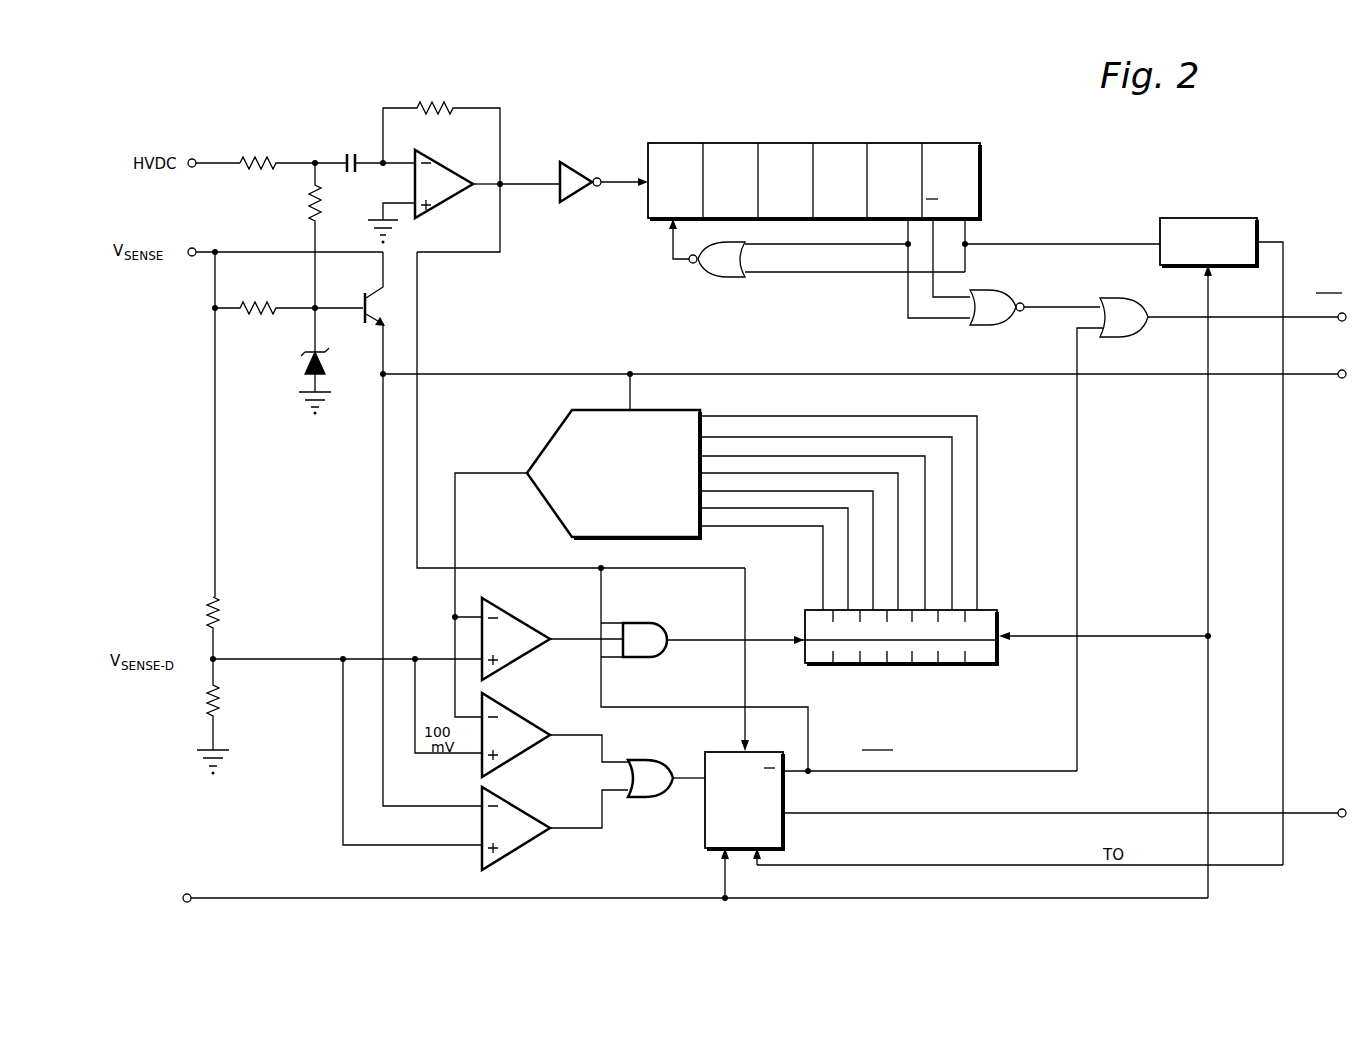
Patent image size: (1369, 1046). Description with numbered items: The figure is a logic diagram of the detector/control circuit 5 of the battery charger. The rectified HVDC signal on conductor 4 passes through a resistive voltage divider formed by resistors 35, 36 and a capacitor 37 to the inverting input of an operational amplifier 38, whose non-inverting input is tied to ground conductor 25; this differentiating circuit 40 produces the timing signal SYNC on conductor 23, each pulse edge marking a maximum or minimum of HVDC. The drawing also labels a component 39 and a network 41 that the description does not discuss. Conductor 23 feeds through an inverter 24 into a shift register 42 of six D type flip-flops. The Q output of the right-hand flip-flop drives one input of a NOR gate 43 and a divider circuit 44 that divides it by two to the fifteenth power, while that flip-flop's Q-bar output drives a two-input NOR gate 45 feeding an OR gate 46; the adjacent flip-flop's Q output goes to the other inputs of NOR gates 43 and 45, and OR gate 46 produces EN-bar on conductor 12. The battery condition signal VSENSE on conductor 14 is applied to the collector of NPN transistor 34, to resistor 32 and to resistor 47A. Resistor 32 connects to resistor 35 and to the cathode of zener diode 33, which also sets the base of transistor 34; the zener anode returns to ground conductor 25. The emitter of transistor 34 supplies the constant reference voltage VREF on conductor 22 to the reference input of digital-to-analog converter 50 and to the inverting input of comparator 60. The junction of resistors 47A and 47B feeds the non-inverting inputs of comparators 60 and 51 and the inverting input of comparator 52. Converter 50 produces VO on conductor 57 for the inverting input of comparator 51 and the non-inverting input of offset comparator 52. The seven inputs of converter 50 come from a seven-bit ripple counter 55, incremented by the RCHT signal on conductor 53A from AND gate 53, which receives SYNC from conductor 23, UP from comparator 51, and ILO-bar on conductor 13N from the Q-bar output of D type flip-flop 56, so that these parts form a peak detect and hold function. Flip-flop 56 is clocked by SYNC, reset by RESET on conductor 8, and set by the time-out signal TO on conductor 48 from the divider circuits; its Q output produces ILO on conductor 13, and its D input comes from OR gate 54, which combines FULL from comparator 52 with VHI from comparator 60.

The conductor 4 is at (198, 162).
The resistor 36 is at (257, 159).
The resistor 35 is at (308, 208).
The capacitor 37 is at (360, 172).
The differentiating circuit 40 is at (376, 138).
The feedback resistor 39 is at (431, 109).
The operational amplifier 38 is at (444, 154).
The conductor 23 is at (503, 190).
The inverter 24 is at (574, 166).
The shift register 42 is at (950, 143).
The NOR gate 43 is at (695, 275).
The NOR gate 45 is at (1012, 282).
The OR gate 46 is at (1119, 300).
The divider circuit 44 is at (1243, 200).
The conductor 48 is at (1283, 257).
The conductor 12 is at (1338, 322).
The conductor 22 is at (1338, 379).
The conductor 14 is at (196, 252).
The sense network 41 is at (196, 330).
The resistor 32 is at (257, 305).
The NPN transistor 34 is at (359, 295).
The zener diode 33 is at (306, 360).
The ground conductor 25 is at (321, 395).
The digital-to-analog converter 50 is at (660, 412).
The conductor 57 is at (457, 510).
The ripple counter 55 is at (986, 603).
The resistor 47A is at (227, 616).
The resistor 47B is at (227, 707).
The comparator 51 is at (516, 618).
The comparator 52 is at (517, 714).
The comparator 60 is at (522, 809).
The AND gate 53 is at (634, 628).
The conductor 53A is at (766, 645).
The OR gate 54 is at (634, 765).
The D type flip-flop 56 is at (793, 738).
The conductor 13N is at (840, 752).
The conductor 13 is at (1338, 817).
The RESET conductor 8 is at (191, 898).
The detector/control circuit 5 is at (150, 820).